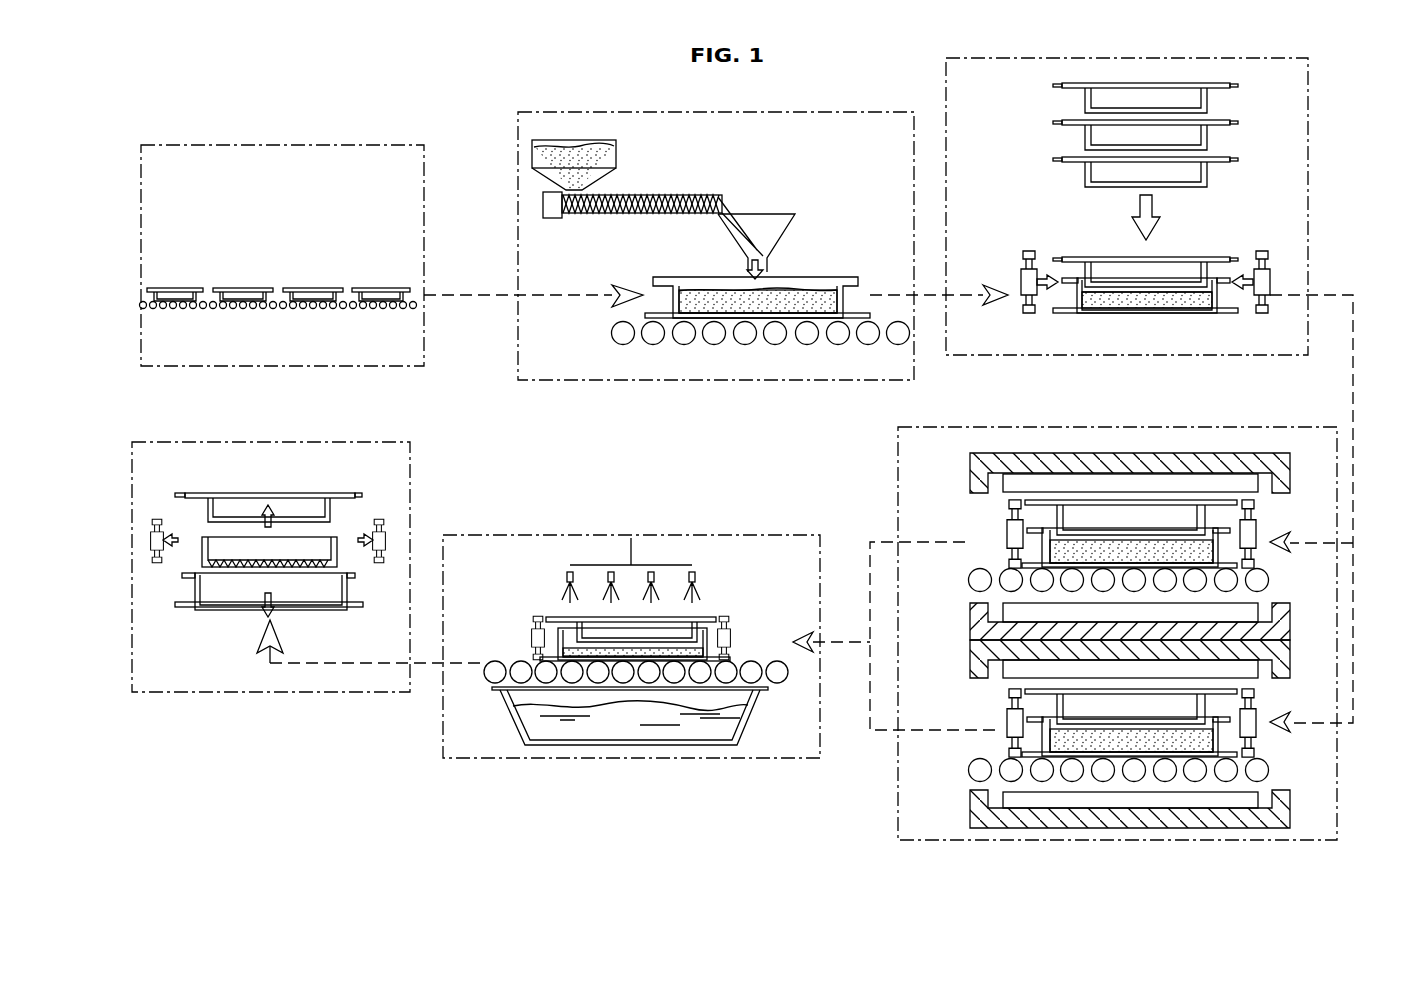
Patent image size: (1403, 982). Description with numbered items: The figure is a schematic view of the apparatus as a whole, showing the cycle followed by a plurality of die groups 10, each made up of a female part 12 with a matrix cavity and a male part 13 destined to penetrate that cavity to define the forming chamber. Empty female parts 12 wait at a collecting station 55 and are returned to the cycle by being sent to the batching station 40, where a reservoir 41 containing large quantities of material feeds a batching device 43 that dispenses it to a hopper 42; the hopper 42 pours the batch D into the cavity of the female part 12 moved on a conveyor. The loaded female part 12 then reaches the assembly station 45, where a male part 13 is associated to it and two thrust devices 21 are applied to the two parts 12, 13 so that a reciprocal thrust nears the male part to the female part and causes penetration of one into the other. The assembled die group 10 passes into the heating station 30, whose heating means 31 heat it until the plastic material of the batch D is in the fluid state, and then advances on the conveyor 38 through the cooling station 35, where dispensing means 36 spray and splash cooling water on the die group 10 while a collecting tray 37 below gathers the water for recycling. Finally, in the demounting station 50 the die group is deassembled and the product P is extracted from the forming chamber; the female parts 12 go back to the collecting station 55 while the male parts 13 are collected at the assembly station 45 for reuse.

The die group 10 is at (1228, 240).
The female part 12 is at (245, 293).
The male part 13 is at (1075, 257).
The thrust device 21 is at (1020, 277).
The heating station 30 is at (897, 792).
The heating means 31 is at (1232, 485).
The cooling station 35 is at (543, 535).
The dispensing means 36 is at (637, 563).
The collecting tray 37 is at (512, 718).
The conveyor 38 is at (623, 677).
The batching station 40 is at (800, 112).
The reservoir 41 is at (530, 156).
The hopper 42 is at (760, 222).
The batching device 43 is at (648, 195).
The assembly station 45 is at (1308, 118).
The demounting station 50 is at (358, 692).
The collecting station 55 is at (272, 145).
The batch D is at (812, 292).
The product P is at (303, 547).